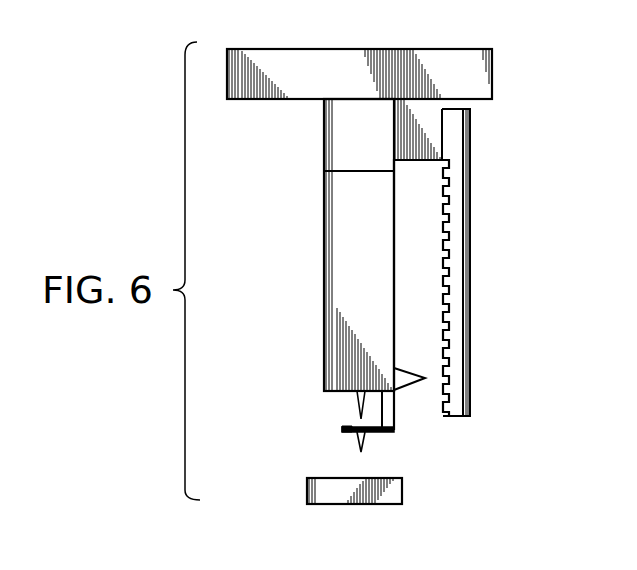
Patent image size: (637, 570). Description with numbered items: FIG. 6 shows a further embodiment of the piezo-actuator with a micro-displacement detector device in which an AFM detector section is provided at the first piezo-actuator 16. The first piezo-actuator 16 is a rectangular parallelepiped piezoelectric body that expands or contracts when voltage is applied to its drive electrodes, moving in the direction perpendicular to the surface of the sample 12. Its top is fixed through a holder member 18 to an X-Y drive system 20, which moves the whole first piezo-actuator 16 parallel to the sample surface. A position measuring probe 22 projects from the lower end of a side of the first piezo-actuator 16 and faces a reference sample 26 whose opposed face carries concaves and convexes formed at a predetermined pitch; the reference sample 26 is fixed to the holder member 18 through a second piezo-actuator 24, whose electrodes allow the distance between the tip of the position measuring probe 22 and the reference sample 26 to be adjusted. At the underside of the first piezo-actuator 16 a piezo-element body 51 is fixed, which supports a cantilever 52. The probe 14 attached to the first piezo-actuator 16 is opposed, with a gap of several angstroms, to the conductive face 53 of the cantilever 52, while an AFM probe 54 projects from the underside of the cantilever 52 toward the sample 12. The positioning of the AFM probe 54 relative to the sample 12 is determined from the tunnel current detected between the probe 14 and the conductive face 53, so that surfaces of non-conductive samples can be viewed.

The sample 12 is at (402, 491).
The probe 14 is at (353, 405).
The first piezo-actuator 16 is at (323, 248).
The holder member 18 is at (323, 157).
The X-Y drive system 20 is at (373, 49).
The position measuring probe 22 is at (413, 372).
The second piezo-actuator 24 is at (412, 162).
The reference sample 26 is at (471, 230).
The piezo-element body 51 is at (397, 417).
The cantilever 52 is at (348, 434).
The conductive face 53 is at (346, 422).
The AFM probe 54 is at (372, 441).